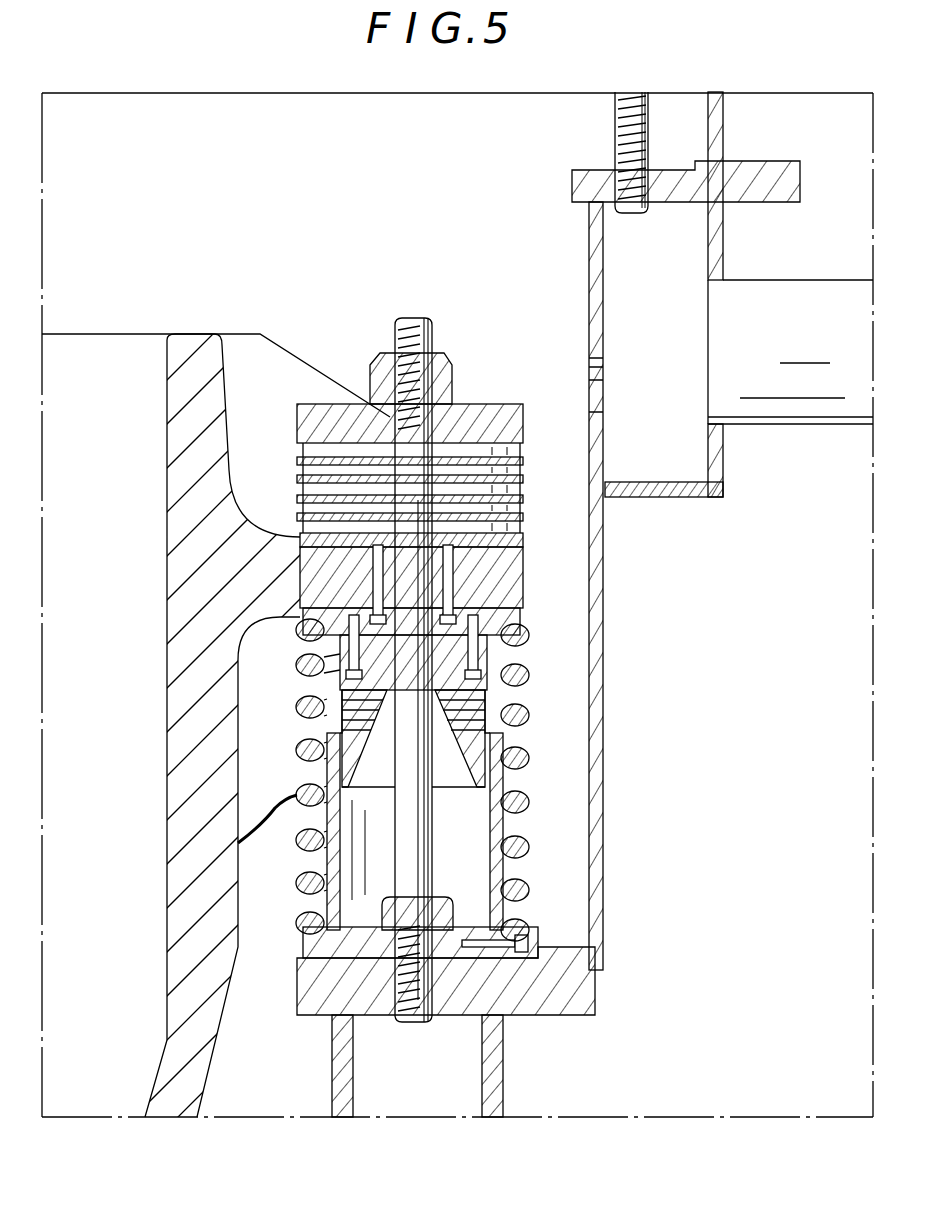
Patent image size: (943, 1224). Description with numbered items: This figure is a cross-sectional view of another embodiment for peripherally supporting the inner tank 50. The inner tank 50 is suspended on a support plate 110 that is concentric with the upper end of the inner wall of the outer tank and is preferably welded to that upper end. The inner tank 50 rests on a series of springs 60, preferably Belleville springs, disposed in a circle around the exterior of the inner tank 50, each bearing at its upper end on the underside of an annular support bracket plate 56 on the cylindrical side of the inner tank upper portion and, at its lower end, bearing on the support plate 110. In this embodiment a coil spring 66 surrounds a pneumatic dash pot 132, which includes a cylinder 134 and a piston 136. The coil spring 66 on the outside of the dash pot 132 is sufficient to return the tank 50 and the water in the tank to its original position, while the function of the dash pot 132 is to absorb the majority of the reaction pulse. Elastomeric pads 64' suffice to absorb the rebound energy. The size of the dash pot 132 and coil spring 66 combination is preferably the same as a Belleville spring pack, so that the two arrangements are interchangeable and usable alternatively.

The inner tank 50 is at (177, 737).
The support bracket plate 56 is at (525, 595).
The springs 60 is at (566, 804).
The elastomeric pads 64' is at (476, 475).
The coil spring 66 is at (303, 812).
The support plate 110 is at (597, 1013).
The pneumatic dash pot 132 is at (519, 870).
The cylinder 134 is at (503, 915).
The piston 136 is at (456, 775).